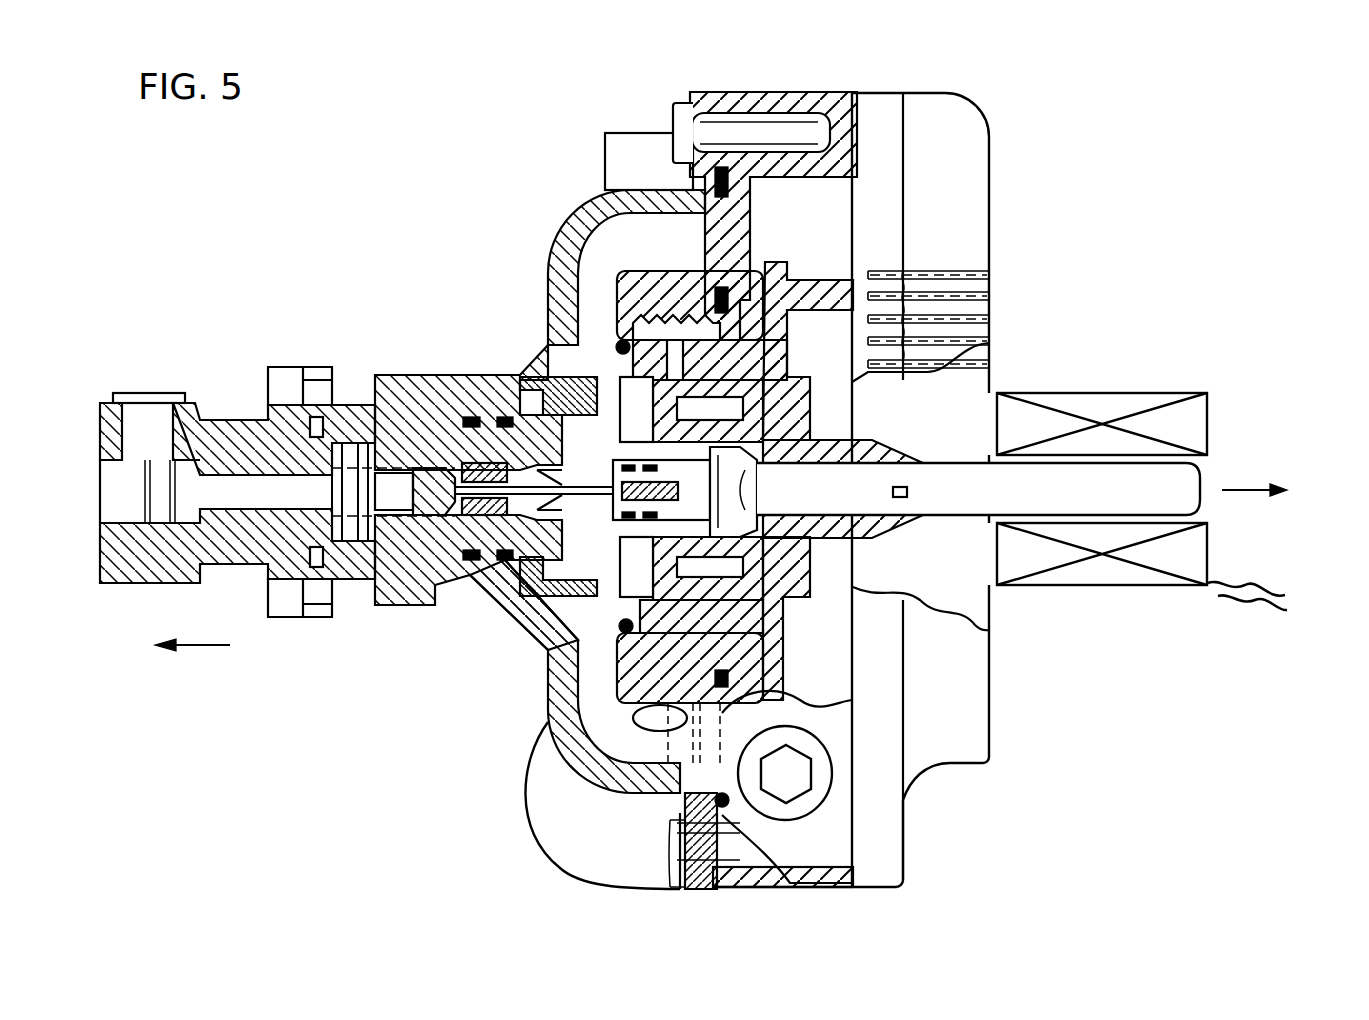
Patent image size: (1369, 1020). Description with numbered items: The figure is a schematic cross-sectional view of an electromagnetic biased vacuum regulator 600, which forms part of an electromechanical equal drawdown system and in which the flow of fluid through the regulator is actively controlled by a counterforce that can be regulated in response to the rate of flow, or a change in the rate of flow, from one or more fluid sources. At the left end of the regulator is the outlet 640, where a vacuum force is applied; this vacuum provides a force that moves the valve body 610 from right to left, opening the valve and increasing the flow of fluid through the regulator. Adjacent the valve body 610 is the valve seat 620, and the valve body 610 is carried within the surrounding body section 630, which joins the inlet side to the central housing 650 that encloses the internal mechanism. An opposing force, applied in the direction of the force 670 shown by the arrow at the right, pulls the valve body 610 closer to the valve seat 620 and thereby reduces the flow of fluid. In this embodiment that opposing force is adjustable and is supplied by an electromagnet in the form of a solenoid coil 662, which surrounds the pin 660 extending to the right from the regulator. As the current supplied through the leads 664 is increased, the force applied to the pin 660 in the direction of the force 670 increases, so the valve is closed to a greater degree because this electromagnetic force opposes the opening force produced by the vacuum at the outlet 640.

The valve assembly 600 is at (1100, 168).
The valve body 610 is at (422, 468).
The valve seat 620 is at (488, 468).
The valve body collar 630 is at (590, 483).
The outlet 640 is at (118, 477).
The rotor block 650 is at (642, 260).
The pin 660 is at (1130, 492).
The solenoid coil 662 is at (1185, 422).
The leads 664 is at (1245, 590).
The force 670 is at (1243, 497).